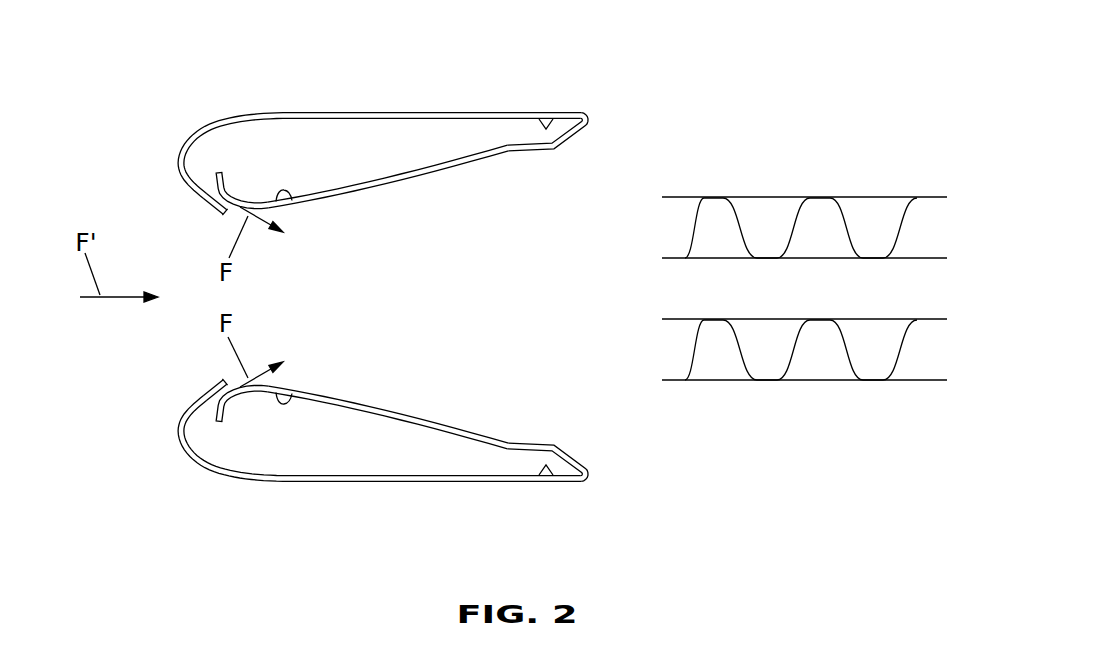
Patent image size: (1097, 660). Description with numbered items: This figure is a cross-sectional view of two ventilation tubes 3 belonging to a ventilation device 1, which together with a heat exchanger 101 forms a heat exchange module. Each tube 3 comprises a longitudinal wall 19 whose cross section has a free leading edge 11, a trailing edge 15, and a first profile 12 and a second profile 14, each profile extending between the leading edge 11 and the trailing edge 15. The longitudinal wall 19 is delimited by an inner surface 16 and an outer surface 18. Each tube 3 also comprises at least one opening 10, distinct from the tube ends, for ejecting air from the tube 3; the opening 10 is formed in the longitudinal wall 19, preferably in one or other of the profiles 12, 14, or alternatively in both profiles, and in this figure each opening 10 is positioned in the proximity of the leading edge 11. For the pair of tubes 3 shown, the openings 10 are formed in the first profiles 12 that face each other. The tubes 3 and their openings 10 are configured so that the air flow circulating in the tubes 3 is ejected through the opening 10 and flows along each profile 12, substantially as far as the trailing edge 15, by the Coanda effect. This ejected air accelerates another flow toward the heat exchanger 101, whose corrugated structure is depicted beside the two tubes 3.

The ventilation device 1 is at (368, 297).
The ventilation tube 3 is at (368, 297).
The opening 10 is at (203, 178).
The free leading edge 11 is at (182, 152).
The first profile 12 is at (443, 172).
The second profile 14 is at (417, 113).
The trailing edge 15 is at (567, 142).
The inner surface 16 is at (548, 122).
The outer surface 18 is at (291, 201).
The longitudinal wall 19 is at (340, 117).
The heat exchanger 101 is at (743, 380).